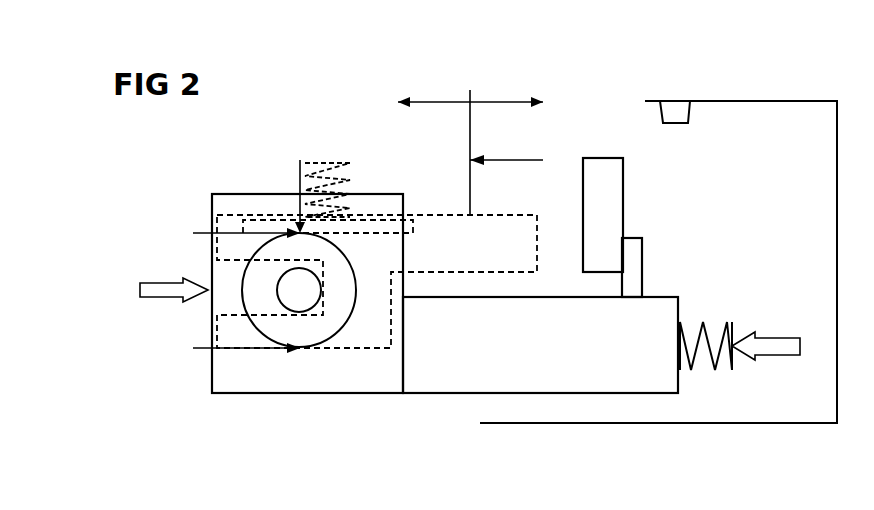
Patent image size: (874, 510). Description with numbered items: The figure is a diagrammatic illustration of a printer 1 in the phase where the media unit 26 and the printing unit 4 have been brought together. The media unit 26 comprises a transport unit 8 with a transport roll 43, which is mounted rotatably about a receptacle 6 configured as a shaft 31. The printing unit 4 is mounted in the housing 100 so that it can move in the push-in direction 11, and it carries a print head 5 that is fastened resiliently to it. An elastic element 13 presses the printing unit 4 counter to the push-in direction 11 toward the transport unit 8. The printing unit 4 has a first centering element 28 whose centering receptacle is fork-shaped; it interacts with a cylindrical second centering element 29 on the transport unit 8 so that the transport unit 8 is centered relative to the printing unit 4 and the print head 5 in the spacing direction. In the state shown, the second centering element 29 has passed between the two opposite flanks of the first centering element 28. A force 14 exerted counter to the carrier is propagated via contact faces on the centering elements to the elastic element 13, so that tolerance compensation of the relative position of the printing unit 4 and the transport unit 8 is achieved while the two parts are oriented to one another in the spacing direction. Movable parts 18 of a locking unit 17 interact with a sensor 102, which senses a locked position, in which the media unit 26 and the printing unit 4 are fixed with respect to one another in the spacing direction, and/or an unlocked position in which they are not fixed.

The printer 1 is at (188, 179).
The printing unit 4 is at (491, 236).
The print head 5 is at (376, 203).
The receptacle 6 is at (304, 327).
The transport unit 8 is at (232, 373).
The push-in direction 11 is at (212, 289).
The elastic element 13 is at (702, 322).
The force 14 is at (160, 286).
The locking unit 17 is at (601, 165).
The movable parts 18 is at (633, 238).
The media unit 26 is at (283, 197).
The first centering element 28 is at (228, 329).
The second centering element 29 is at (304, 327).
The shaft 31 is at (299, 300).
The transport roll 43 is at (338, 313).
The housing 100 is at (716, 92).
The sensor 102 is at (678, 108).